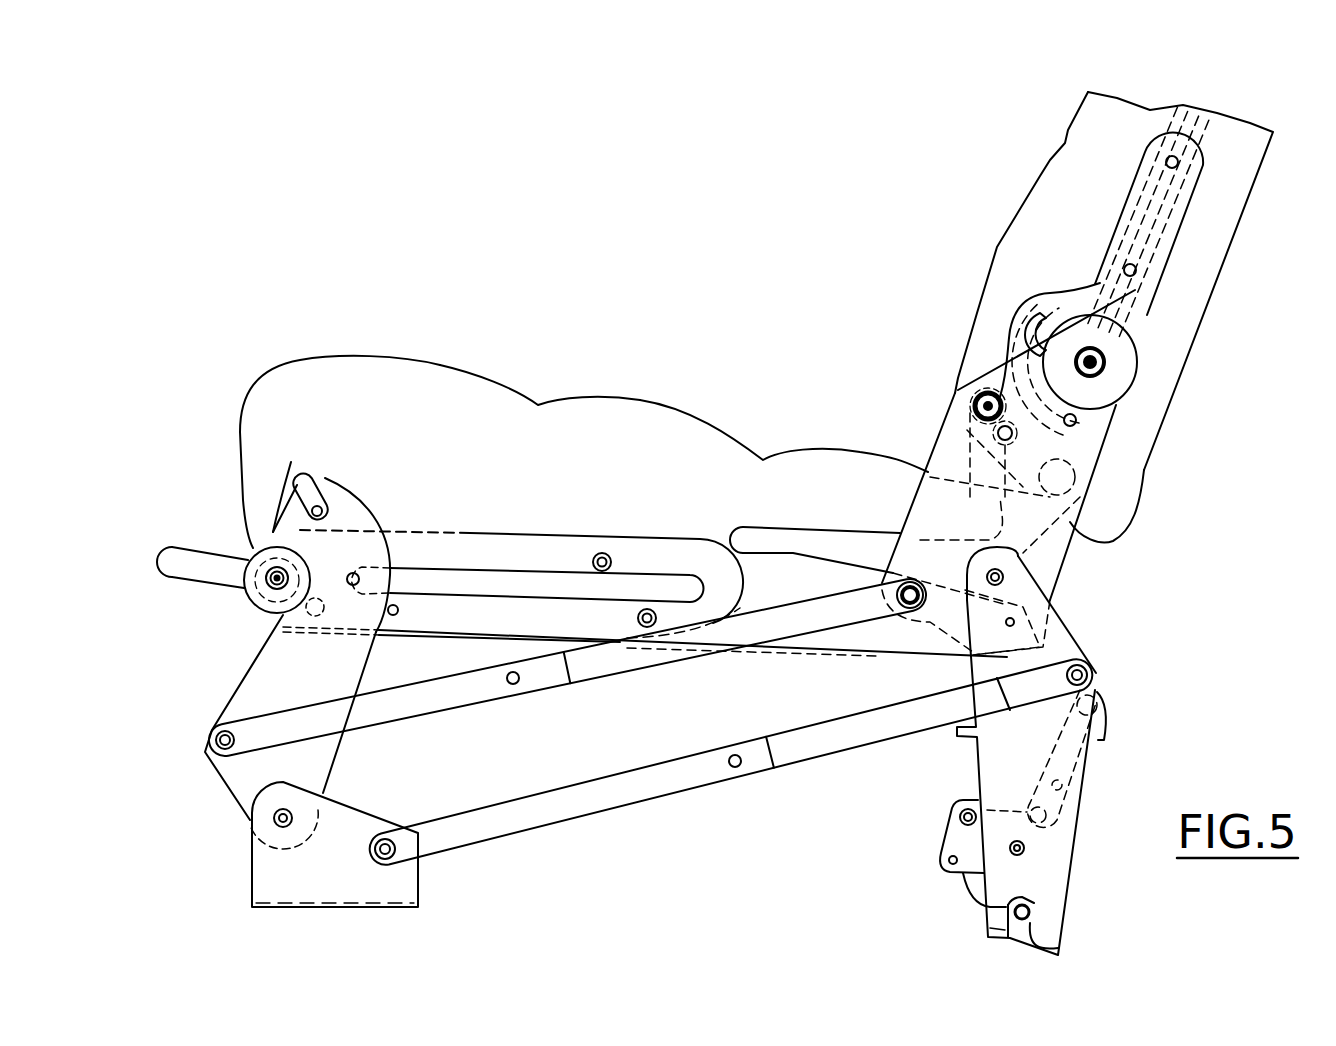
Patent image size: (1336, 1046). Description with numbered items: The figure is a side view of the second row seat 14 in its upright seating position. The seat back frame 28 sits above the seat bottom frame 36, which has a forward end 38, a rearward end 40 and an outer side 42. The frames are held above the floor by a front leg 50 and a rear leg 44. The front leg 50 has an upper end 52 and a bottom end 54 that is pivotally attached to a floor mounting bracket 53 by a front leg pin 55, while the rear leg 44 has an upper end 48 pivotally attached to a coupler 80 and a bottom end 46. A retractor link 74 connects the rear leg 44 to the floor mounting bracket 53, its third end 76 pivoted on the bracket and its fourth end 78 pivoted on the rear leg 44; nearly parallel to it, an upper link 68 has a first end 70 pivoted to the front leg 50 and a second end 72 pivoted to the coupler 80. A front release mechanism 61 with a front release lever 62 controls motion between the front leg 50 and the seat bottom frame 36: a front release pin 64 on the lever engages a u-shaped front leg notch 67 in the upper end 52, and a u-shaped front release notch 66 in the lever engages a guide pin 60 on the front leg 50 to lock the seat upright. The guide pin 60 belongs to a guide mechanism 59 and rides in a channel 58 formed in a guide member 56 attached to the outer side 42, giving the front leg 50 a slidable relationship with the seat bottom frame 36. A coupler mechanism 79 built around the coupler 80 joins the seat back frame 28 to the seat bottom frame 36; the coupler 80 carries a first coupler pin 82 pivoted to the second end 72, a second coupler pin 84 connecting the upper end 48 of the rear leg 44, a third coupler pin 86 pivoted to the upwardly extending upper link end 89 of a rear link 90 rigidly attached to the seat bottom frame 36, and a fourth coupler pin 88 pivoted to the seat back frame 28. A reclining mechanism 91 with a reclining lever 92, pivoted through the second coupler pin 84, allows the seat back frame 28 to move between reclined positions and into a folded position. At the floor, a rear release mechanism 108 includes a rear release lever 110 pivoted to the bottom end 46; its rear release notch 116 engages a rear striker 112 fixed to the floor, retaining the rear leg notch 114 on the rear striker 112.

The second row seat 14 is at (876, 169).
The seat back frame 28 is at (1218, 221).
The seat bottom frame 36 is at (662, 379).
The forward end 38 is at (248, 503).
The rearward end 40 is at (1048, 572).
The outer side 42 is at (575, 408).
The rear leg 44 is at (990, 748).
The bottom end 46 is at (997, 905).
The upper end 48 is at (1000, 558).
The front leg 50 is at (270, 652).
The upper end 52 is at (350, 523).
The floor mounting bracket 53 is at (310, 870).
The bottom end 54 is at (257, 795).
The front leg pin 55 is at (274, 822).
The guide member 56 is at (568, 545).
The channel 58 is at (490, 580).
The guide mechanism 59 is at (541, 555).
The guide pin 60 is at (363, 560).
The front release mechanism 61 is at (214, 601).
The front release lever 62 is at (176, 556).
The front release pin 64 is at (322, 506).
The front release notch 66 is at (340, 622).
The front leg notch 67 is at (290, 480).
The upper link 68 is at (650, 660).
The first end 70 is at (257, 720).
The second end 72 is at (845, 598).
The retractor link 74 is at (715, 783).
The third end 76 is at (483, 838).
The fourth end 78 is at (1067, 660).
The coupler mechanism 79 is at (1105, 473).
The coupler 80 is at (950, 450).
The first coupler pin 82 is at (905, 612).
The second coupler pin 84 is at (1020, 572).
The third coupler pin 86 is at (985, 397).
The fourth coupler pin 88 is at (1105, 361).
The upper link end 89 is at (957, 415).
The rear link 90 is at (961, 518).
The reclining mechanism 91 is at (915, 535).
The reclining lever 92 is at (770, 530).
The rear release mechanism 108 is at (1068, 820).
The rear release lever 110 is at (1100, 738).
The rear striker 112 is at (1028, 904).
The rear leg notch 114 is at (1057, 942).
The rear release notch 116 is at (995, 922).